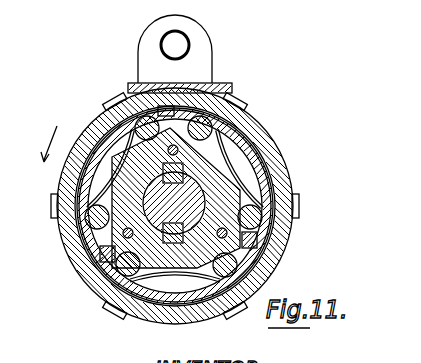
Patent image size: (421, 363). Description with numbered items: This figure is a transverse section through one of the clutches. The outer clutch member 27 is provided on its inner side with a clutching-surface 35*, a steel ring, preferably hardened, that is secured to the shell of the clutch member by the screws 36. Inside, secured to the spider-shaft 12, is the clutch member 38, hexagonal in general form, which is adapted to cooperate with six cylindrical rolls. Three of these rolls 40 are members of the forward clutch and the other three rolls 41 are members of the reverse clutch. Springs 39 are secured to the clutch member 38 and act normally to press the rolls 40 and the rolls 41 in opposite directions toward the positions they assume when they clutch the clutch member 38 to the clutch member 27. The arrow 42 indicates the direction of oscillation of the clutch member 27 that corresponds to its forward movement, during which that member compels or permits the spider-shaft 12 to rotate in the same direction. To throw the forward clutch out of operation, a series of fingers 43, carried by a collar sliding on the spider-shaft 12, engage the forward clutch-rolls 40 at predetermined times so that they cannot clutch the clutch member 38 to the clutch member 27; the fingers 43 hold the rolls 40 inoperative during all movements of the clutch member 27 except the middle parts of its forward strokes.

The spider-shaft 12 is at (185, 208).
The clutch member 27 is at (138, 78).
The clutching-surface 35 is at (278, 222).
The screws 36 is at (298, 208).
The clutch member 38 is at (158, 248).
The springs 39 is at (218, 132).
The rolls 40 is at (262, 224).
The rolls 41 is at (205, 95).
The arrow 42 is at (34, 144).
The fingers 43 is at (200, 92).